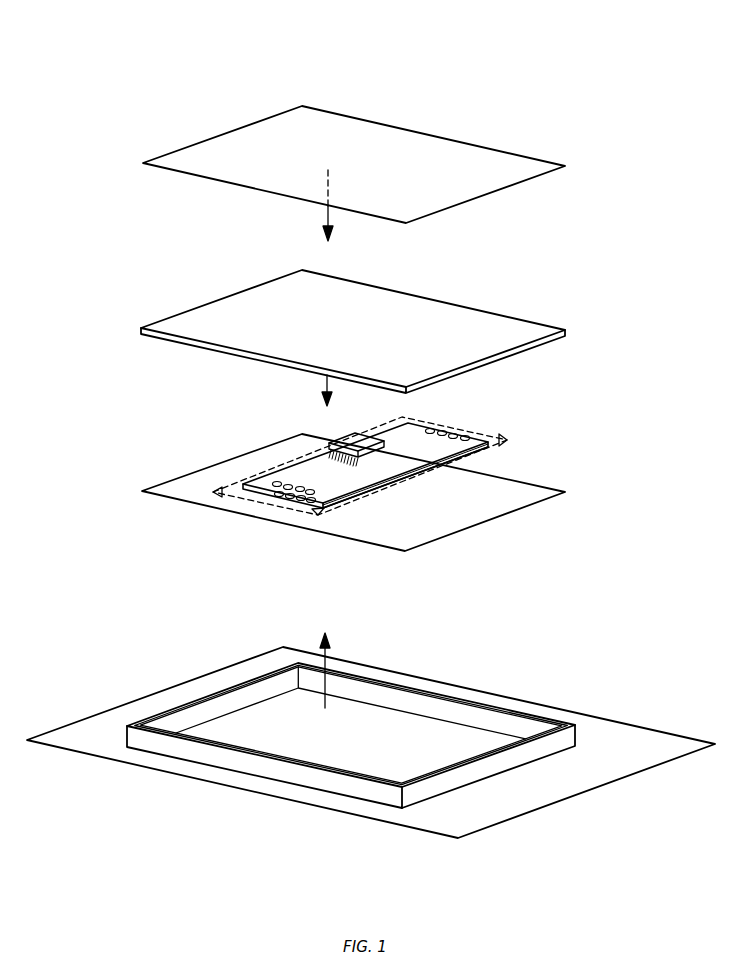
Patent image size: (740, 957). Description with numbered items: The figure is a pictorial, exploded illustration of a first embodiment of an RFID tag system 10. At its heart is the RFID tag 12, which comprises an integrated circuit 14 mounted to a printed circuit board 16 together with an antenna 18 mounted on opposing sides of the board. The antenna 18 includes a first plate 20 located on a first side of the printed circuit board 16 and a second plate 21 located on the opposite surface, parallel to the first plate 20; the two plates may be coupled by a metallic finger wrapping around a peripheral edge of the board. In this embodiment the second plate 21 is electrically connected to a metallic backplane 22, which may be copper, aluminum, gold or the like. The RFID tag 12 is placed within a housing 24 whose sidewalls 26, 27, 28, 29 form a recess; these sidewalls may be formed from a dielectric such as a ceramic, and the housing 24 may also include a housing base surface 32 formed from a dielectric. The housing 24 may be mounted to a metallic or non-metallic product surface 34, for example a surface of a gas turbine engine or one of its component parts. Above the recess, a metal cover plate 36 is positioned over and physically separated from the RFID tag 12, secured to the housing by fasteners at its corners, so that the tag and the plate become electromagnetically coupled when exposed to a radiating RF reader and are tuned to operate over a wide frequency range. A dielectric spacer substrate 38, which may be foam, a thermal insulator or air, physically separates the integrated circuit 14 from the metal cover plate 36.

The RFID tag system 10 is at (592, 72).
The RFID tag 12 is at (590, 455).
The integrated circuit 14 is at (352, 441).
The printed circuit board 16 is at (507, 440).
The antenna 18 is at (352, 492).
The first plate 20 is at (367, 470).
The second plate 21 is at (417, 478).
The metallic backplane 22 is at (525, 493).
The housing 24 is at (401, 688).
The sidewall 26 is at (508, 720).
The sidewall 27 is at (475, 772).
The sidewall 28 is at (342, 783).
The sidewall 29 is at (212, 708).
The housing base surface 32 is at (336, 688).
The product surface 34 is at (645, 737).
The metal cover plate 36 is at (347, 131).
The dielectric spacer substrate 38 is at (497, 327).